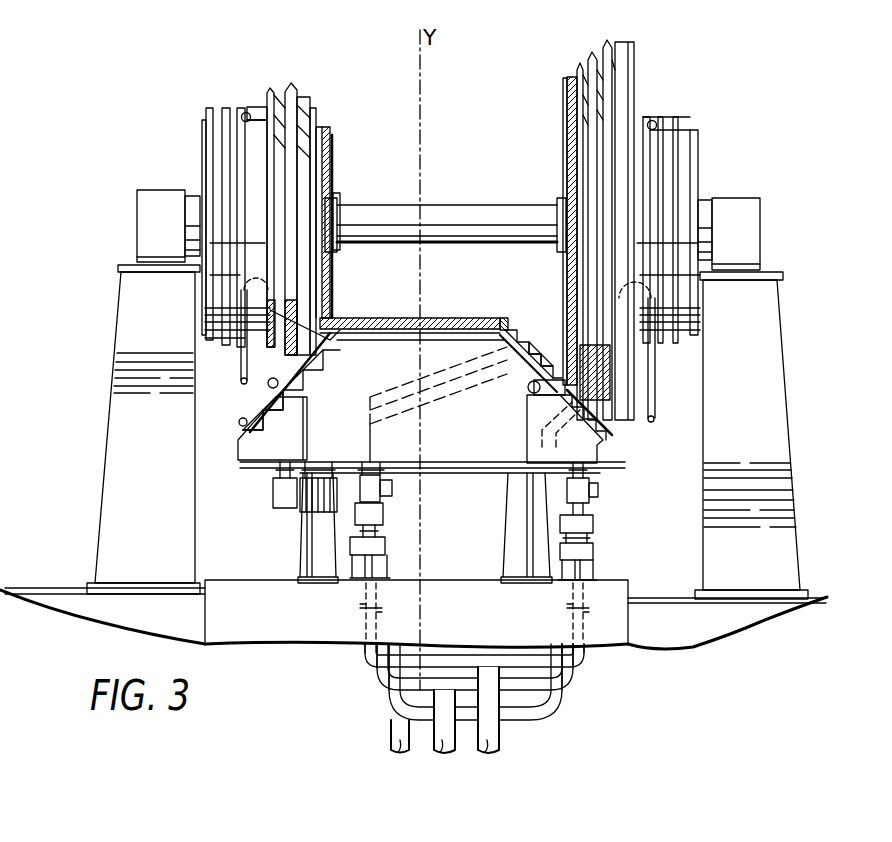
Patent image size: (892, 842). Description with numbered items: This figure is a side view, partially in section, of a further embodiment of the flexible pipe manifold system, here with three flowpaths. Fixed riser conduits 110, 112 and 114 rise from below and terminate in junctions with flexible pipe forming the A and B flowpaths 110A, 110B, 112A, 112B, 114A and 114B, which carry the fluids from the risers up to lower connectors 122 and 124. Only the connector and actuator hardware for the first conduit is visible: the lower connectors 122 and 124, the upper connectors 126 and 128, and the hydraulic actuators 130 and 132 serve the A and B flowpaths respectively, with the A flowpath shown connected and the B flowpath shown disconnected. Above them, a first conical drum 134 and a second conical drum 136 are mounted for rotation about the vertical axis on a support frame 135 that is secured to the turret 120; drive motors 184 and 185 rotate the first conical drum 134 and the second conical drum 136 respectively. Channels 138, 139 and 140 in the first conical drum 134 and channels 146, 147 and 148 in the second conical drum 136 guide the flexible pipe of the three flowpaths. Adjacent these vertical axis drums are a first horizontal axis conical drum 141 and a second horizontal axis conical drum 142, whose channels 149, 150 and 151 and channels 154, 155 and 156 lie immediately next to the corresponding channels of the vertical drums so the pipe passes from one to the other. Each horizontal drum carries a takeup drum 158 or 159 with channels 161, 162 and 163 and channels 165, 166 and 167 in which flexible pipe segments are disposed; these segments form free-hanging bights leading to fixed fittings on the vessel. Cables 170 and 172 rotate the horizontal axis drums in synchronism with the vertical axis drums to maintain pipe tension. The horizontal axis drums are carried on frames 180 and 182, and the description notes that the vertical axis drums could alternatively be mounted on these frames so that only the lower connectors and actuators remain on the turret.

The fixed riser conduit 110 is at (473, 704).
The A flowpath of conduit 110 110A is at (364, 650).
The B flowpath of conduit 110 110B is at (586, 652).
The fixed riser conduit 112 is at (471, 719).
The A flowpath of conduit 112 112A is at (374, 672).
The B flowpath of conduit 112 112B is at (583, 680).
The fixed riser conduit 114 is at (467, 718).
The A flowpath of conduit 114 114A is at (385, 697).
The B flowpath of conduit 114 114B is at (580, 713).
The turret 120 is at (265, 617).
The lower connector 122 is at (390, 512).
The lower connector 124 is at (595, 519).
The upper connector 126 is at (392, 484).
The upper connector 128 is at (597, 488).
The hydraulic actuator 130 is at (390, 548).
The hydraulic actuator 132 is at (596, 549).
The first conical drum 134 is at (370, 334).
The support frame 135 is at (296, 553).
The second conical drum 136 is at (285, 438).
The channel 138 is at (518, 336).
The channel 139 is at (535, 348).
The channel 140 is at (550, 370).
The first horizontal axis conical drum 141 is at (272, 90).
The second horizontal axis conical drum 142 is at (634, 46).
The channel 146 is at (243, 383).
The channel 147 is at (255, 403).
The channel 148 is at (235, 414).
The channel 149 is at (317, 118).
The channel 150 is at (308, 104).
The channel 151 is at (296, 92).
The channel 154 is at (576, 68).
The channel 155 is at (598, 58).
The channel 156 is at (614, 32).
The takeup drum 158 is at (203, 150).
The takeup drum 159 is at (699, 152).
The channel 161 is at (245, 108).
The channel 162 is at (226, 107).
The channel 163 is at (209, 108).
The channel 165 is at (686, 117).
The channel 166 is at (665, 116).
The channel 167 is at (651, 116).
The cable 170 is at (503, 325).
The cable 172 is at (300, 386).
The frame 180 is at (125, 441).
The frame 182 is at (777, 470).
The drive motor 184 is at (318, 505).
The drive motor 185 is at (273, 489).